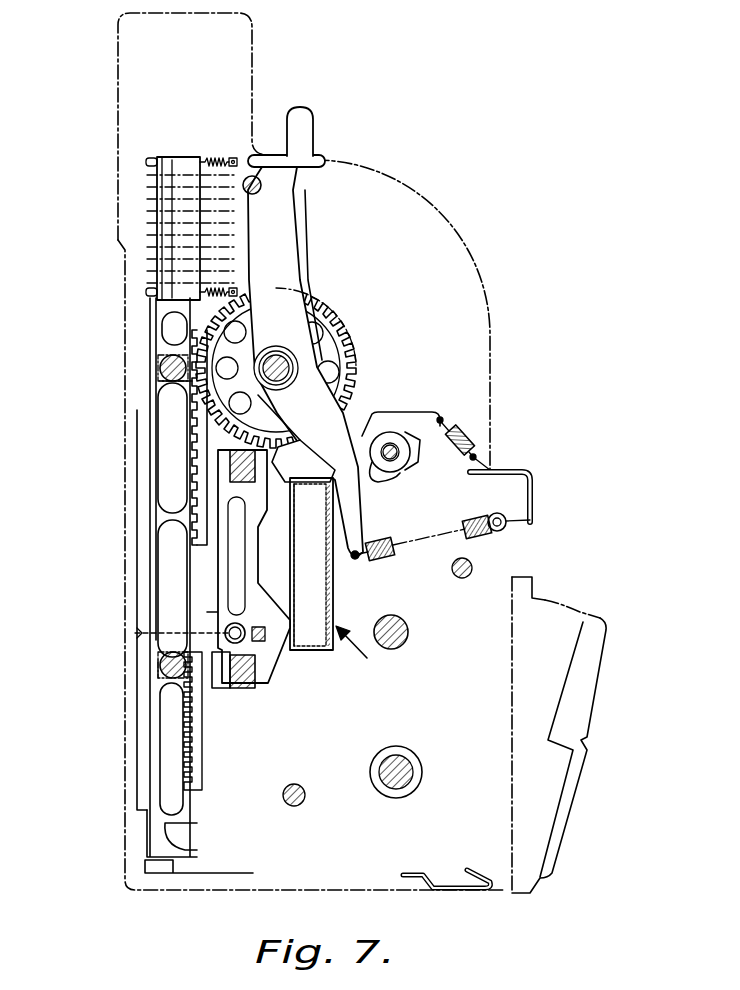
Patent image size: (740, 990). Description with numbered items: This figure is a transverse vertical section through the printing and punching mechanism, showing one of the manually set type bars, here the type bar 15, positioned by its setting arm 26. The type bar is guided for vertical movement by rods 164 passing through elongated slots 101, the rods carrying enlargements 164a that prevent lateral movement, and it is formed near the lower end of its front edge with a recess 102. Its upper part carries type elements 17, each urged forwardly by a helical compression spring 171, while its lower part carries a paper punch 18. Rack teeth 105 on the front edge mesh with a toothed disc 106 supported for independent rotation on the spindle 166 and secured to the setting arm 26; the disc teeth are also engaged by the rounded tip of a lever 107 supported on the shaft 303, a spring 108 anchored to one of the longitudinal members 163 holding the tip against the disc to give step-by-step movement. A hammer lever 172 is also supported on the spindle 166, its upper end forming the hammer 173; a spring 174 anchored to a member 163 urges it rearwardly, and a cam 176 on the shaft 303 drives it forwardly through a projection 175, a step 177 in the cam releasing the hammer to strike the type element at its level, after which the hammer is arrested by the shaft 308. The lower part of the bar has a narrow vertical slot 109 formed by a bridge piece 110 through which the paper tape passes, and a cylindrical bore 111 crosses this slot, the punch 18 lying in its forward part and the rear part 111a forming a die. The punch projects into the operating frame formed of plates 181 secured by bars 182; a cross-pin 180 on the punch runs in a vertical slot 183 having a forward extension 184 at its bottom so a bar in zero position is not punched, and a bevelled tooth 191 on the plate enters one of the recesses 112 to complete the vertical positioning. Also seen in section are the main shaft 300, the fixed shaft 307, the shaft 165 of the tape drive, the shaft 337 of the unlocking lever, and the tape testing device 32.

The type elements 17 is at (160, 157).
The helical compression spring 171 is at (218, 162).
The hammer 173 is at (258, 157).
The setting arm 26 is at (306, 116).
The shaft 308 is at (262, 190).
The hammer lever 172 is at (280, 290).
The spindle 166 is at (286, 362).
The disc 106 is at (350, 340).
The step 177 is at (423, 400).
The shaft 303 is at (392, 445).
The projection 175 is at (350, 435).
The lever 107 is at (415, 412).
The spring 108 is at (470, 433).
The longitudinal members 163 is at (512, 480).
The cam 176 is at (400, 476).
The spring 174 is at (440, 538).
The shaft 337 is at (466, 578).
The shaft 300 is at (408, 633).
The testing device 32 is at (359, 655).
The paper punch 18 is at (210, 630).
The vertical slot 183 is at (240, 537).
The vertical plate 181 is at (253, 557).
The forward extension 184 is at (265, 640).
The cross-pin 180 is at (250, 657).
The bars 182 is at (245, 650).
The tooth 191 is at (215, 690).
The recesses 112 is at (200, 763).
The fixed shaft 307 is at (414, 768).
The shaft 165 is at (303, 802).
The recess 102 is at (187, 826).
The rods 164 is at (165, 358).
The enlargements 164a is at (158, 368).
The type bar 15 is at (160, 378).
The elongated slots 101 is at (163, 400).
The rack teeth 105 is at (200, 410).
The bridge piece 110 is at (137, 453).
The cylindrical bore 111 is at (147, 630).
The rear part of bore 111a is at (137, 633).
The vertical slot 109 is at (158, 672).